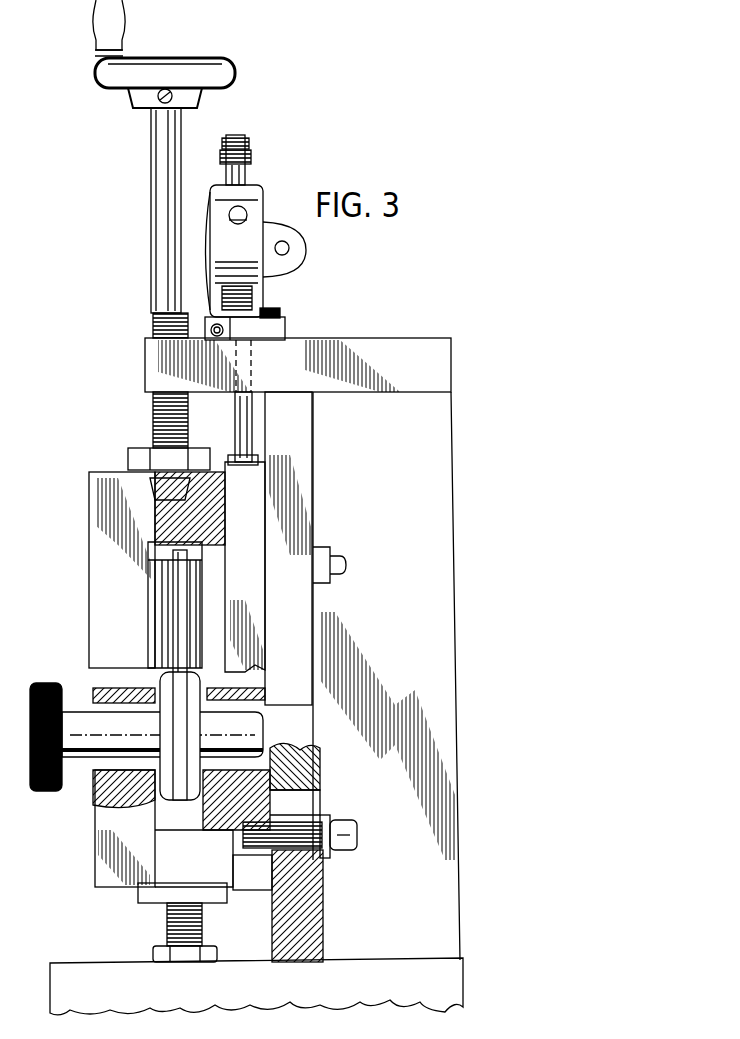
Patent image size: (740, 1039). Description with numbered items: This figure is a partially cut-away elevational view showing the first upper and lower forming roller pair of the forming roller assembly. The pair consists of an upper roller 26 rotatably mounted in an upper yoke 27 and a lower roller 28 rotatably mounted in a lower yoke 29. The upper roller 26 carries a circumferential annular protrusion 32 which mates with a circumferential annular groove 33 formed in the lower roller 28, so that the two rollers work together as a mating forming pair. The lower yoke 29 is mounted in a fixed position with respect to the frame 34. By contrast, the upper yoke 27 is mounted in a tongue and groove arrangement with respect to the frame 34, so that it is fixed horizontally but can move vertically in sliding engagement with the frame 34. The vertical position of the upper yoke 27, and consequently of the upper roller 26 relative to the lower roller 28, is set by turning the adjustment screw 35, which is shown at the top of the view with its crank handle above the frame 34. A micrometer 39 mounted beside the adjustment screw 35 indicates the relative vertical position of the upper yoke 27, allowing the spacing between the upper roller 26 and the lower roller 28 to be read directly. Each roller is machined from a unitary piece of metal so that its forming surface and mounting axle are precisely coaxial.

The upper roller 26 is at (160, 612).
The upper yoke 27 is at (90, 548).
The lower roller 28 is at (160, 682).
The lower yoke 29 is at (95, 847).
The circumferential annular protrusion 32 is at (178, 560).
The circumferential annular groove 33 is at (177, 800).
The frame 34 is at (314, 512).
The adjustment screw 35 is at (153, 322).
The micrometer 39 is at (262, 200).